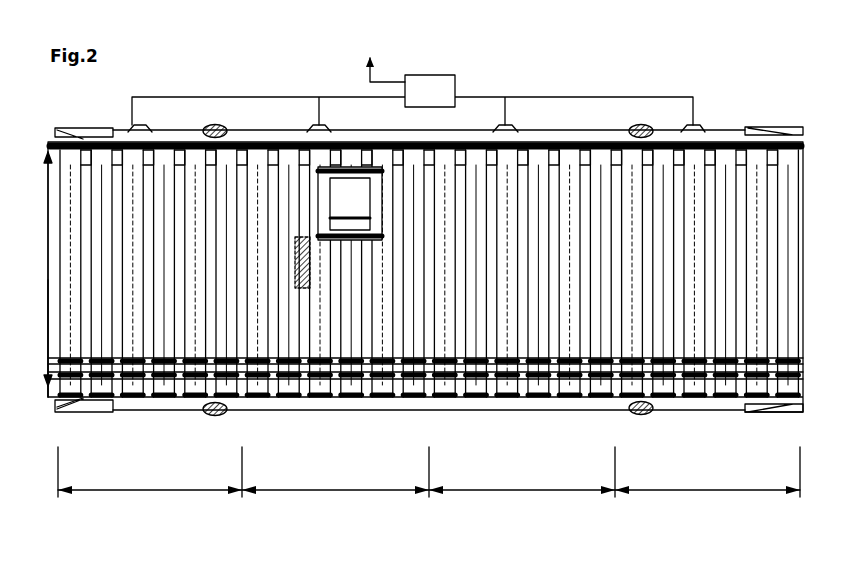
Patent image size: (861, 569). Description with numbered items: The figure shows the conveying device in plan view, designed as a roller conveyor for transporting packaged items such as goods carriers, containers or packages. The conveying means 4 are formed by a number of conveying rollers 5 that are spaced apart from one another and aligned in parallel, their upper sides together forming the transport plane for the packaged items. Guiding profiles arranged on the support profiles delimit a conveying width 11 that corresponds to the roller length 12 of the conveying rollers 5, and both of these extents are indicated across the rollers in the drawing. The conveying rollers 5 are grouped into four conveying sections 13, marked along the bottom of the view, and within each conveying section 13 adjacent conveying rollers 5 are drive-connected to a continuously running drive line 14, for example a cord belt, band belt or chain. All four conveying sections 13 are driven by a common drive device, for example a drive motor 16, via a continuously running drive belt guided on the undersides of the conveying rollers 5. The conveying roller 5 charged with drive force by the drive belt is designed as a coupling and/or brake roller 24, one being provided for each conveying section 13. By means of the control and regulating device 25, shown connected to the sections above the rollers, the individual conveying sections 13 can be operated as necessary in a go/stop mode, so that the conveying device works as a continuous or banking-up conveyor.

The conveying means 4 is at (793, 132).
The conveying roller 5 is at (142, 118).
The conveying width 11 is at (47, 275).
The roller length 12 is at (47, 378).
The conveying section 13 is at (143, 493).
The drive line 14 is at (88, 410).
The drive motor 16 is at (322, 335).
The coupling and/or brake roller 24 is at (140, 398).
The control and regulating device 25 is at (426, 80).